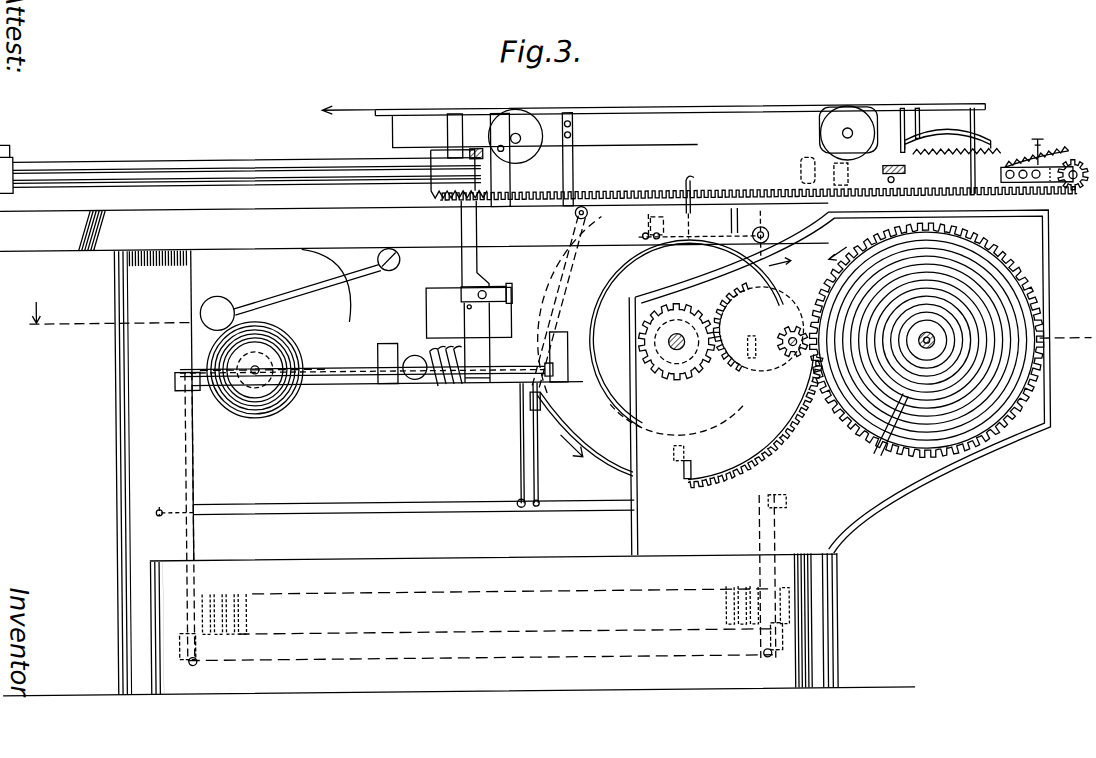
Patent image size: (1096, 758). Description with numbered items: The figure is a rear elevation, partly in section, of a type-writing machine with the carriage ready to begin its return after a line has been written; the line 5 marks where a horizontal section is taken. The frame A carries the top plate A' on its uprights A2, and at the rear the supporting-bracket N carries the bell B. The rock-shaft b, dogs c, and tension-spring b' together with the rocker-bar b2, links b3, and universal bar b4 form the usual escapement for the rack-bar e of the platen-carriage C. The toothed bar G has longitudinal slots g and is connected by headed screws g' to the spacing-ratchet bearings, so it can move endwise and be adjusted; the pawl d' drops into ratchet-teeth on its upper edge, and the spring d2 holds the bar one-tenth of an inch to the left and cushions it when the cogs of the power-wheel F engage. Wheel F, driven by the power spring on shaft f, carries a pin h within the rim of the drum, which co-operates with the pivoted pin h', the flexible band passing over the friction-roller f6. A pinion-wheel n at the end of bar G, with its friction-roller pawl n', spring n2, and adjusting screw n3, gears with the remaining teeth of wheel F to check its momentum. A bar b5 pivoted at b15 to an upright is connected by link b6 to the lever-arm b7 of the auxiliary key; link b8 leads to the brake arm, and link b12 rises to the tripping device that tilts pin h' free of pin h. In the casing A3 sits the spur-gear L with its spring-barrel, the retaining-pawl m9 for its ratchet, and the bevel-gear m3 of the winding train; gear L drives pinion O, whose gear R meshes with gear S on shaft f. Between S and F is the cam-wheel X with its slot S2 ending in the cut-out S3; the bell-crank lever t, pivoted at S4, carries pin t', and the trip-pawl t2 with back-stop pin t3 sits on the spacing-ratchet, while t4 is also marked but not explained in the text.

The frame A is at (459, 612).
The top plate A' is at (414, 227).
The uprights A2 is at (180, 463).
The casing A3 is at (985, 503).
The bell B is at (264, 365).
The platen-carriage C is at (493, 147).
The toothed bar G is at (758, 153).
The spur-gear L is at (998, 266).
The supporting-bracket N is at (300, 289).
The pinion O is at (793, 329).
The gear R is at (812, 412).
The gear S is at (700, 385).
The slot S2 is at (640, 277).
The cut-out portion S3 is at (742, 354).
The pivot S4 is at (770, 236).
The cam-wheel X is at (592, 286).
The power-wheel F is at (585, 434).
The rock-shaft b is at (382, 378).
The tension-spring b' is at (433, 381).
The rocker-bar b2 is at (203, 390).
The links b3 is at (194, 547).
The universal bar b4 is at (480, 623).
The bar b5 is at (458, 490).
The link b6 is at (778, 545).
The lever-arm b7 is at (786, 616).
The link b8 is at (520, 456).
The link b12 is at (538, 455).
The pivot b15 is at (158, 505).
The dogs c is at (469, 291).
The rack-bar e is at (437, 180).
The shaft f is at (676, 341).
The friction-roller f6 is at (578, 217).
The longitudinal slots g is at (735, 157).
The headed screws g' is at (655, 152).
The pawl d' is at (947, 115).
The spring d2 is at (982, 150).
The pin h is at (673, 474).
The pivoted pin h' is at (698, 455).
The retaining-pawl m9 is at (935, 340).
The bevel-gear m3 is at (887, 434).
The pinion-wheel n is at (1071, 191).
The friction-roller pawl n' is at (1061, 147).
The spring n2 is at (1040, 158).
The screw n3 is at (1022, 168).
The bell-crank lever t is at (712, 200).
The pin t' is at (758, 326).
The trip-pawl t2 is at (803, 172).
The back-stop pin t3 is at (835, 175).
The pawl t4 is at (698, 225).
The section line 5 is at (550, 320).